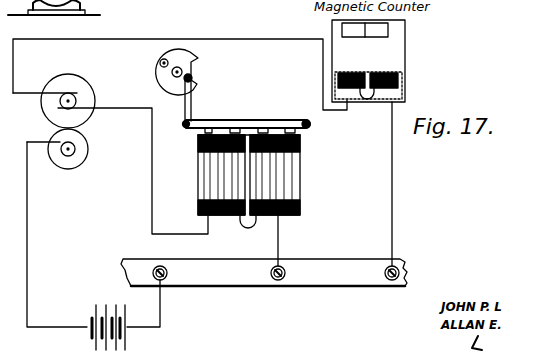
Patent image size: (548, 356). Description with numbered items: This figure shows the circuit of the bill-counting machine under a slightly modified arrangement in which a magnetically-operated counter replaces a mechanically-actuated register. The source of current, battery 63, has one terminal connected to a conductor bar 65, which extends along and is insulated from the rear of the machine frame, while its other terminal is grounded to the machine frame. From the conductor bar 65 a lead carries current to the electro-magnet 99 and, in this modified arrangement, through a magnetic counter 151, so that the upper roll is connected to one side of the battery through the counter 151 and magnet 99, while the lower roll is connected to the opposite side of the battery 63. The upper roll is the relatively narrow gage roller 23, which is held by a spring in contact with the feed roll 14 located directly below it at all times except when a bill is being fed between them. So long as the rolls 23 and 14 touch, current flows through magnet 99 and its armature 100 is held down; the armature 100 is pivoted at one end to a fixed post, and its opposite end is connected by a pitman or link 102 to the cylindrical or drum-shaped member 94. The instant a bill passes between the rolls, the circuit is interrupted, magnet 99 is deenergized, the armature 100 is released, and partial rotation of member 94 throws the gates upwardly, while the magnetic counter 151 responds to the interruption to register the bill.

The roller 23 is at (88, 100).
The feed roll 14 is at (85, 150).
The drum-shaped member 94 is at (185, 57).
The pitman or link 102 is at (191, 101).
The armature 100 is at (255, 123).
The electro-magnet 99 is at (295, 157).
The magnetic counter 151 is at (397, 42).
The conductor bar 65 is at (264, 272).
The source of current 63 is at (95, 310).